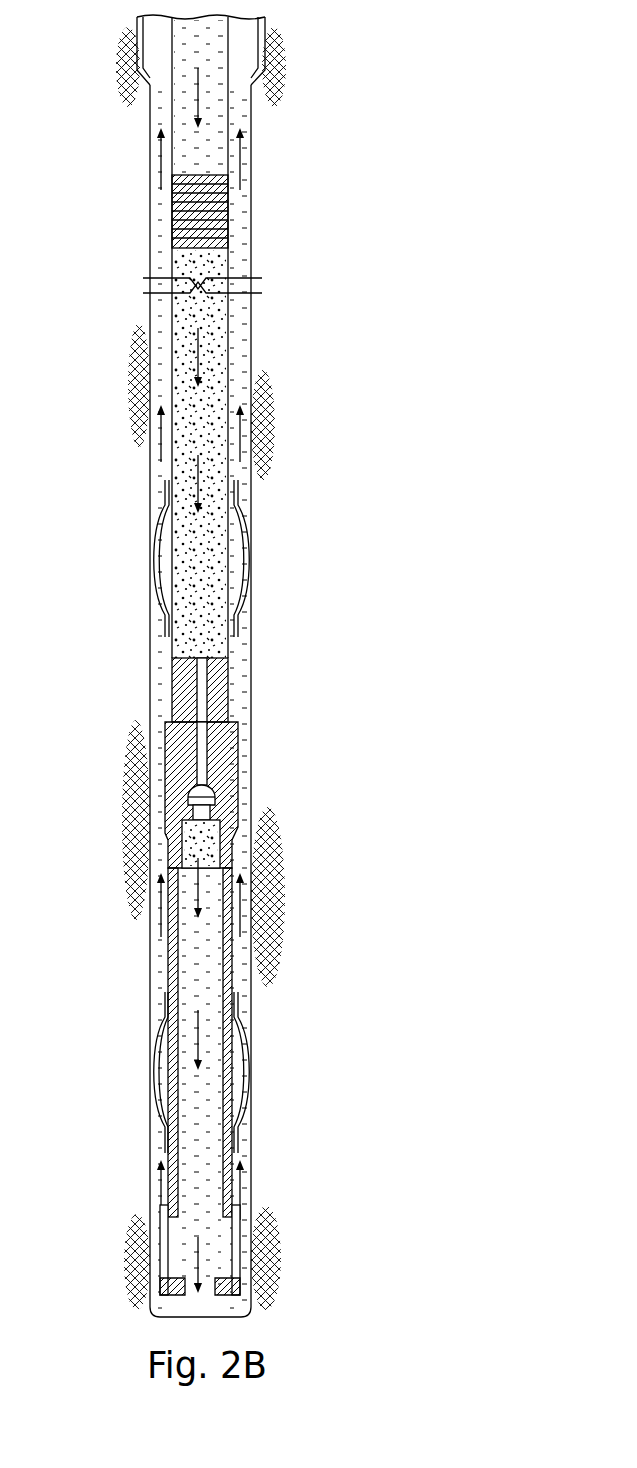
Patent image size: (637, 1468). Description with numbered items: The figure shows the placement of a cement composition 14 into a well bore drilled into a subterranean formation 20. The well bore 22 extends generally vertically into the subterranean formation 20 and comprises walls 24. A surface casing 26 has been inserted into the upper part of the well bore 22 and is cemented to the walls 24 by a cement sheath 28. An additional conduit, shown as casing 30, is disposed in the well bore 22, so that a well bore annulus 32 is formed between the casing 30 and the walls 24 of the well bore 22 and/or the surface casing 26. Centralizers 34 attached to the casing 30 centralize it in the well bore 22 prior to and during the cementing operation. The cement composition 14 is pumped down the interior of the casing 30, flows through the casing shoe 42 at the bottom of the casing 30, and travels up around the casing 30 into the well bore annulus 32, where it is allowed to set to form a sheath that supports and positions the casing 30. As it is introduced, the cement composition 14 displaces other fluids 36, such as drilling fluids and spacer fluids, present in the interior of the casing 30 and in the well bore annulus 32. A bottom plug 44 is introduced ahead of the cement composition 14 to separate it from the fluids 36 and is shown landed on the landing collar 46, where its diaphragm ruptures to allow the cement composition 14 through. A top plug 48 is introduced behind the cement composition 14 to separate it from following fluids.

The cement composition 14 is at (200, 343).
The subterranean formation 20 is at (387, 687).
The well bore 22 is at (268, 498).
The walls 24 is at (240, 205).
The surface casing 26 is at (247, 42).
The cement sheath 28 is at (254, 80).
The casing 30 is at (232, 381).
The well bore annulus 32 is at (158, 470).
The centralizers 34 is at (160, 1037).
The fluids 36 is at (200, 878).
The casing shoe 42 is at (165, 1263).
The bottom plug 44 is at (172, 677).
The landing collar 46 is at (165, 773).
The top plug 48 is at (172, 238).